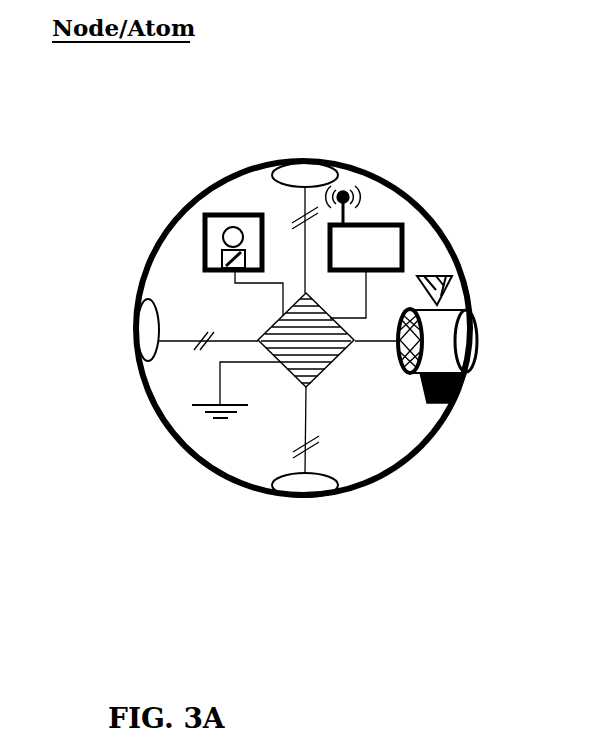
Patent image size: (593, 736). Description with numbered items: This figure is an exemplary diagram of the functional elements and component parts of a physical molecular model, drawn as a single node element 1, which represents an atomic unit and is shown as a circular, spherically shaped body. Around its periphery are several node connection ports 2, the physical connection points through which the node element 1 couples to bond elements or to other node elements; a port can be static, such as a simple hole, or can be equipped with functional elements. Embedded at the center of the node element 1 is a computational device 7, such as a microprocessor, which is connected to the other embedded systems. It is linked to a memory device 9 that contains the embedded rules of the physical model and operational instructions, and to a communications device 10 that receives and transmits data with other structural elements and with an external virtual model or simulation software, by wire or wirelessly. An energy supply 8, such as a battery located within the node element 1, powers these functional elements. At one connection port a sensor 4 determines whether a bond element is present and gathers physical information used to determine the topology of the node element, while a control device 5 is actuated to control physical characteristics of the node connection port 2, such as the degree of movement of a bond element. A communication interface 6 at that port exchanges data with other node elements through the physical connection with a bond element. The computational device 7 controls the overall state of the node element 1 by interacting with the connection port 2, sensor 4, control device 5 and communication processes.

The node element 1 is at (195, 458).
The node connection port 2 is at (300, 160).
The sensor 4 is at (437, 276).
The control device 5 is at (460, 388).
The communication interface 6 is at (402, 366).
The computational device 7 is at (258, 338).
The energy supply 8 is at (220, 422).
The memory device 9 is at (235, 215).
The communications device 10 is at (365, 225).